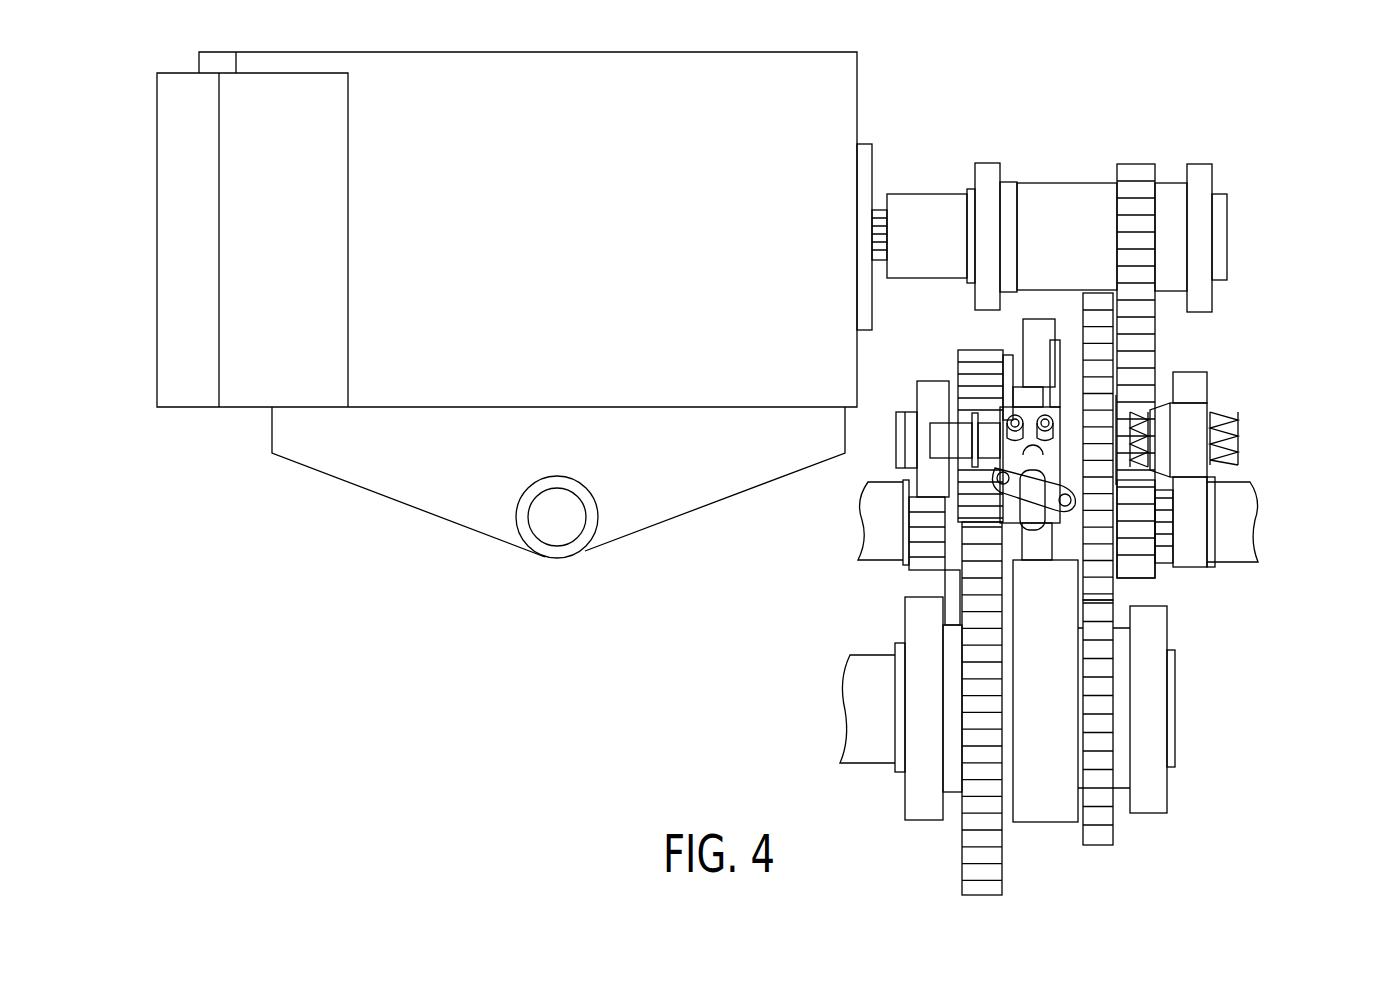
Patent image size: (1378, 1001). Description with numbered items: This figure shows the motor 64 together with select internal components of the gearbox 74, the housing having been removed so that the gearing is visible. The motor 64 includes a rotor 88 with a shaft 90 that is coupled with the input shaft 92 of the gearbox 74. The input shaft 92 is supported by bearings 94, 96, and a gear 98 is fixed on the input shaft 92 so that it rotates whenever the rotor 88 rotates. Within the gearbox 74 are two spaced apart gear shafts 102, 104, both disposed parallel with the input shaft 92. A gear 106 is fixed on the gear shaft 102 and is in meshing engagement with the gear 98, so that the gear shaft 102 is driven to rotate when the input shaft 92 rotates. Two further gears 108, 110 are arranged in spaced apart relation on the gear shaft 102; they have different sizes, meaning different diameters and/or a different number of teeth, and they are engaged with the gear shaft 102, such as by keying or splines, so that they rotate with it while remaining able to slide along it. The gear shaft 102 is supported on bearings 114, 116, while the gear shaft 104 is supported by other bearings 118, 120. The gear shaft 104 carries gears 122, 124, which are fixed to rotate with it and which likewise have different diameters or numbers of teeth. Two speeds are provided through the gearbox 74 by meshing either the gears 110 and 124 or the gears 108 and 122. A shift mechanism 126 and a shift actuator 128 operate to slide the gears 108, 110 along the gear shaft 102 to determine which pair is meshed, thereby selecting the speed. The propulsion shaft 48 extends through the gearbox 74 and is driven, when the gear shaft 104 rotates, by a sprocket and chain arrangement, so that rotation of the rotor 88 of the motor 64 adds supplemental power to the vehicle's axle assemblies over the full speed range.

The propulsion shaft 48 is at (1243, 563).
The motor 64 is at (578, 231).
The gearbox 74 is at (1255, 310).
The rotor 88 is at (872, 177).
The shaft 90 is at (880, 207).
The input shaft 92 is at (1067, 183).
The bearing 94 is at (985, 162).
The bearing 96 is at (1202, 163).
The gear 98 is at (1138, 164).
The gear shaft 102 is at (893, 440).
The gear shaft 104 is at (895, 640).
The gear 106 is at (1137, 578).
The gear 108 is at (982, 350).
The gear 110 is at (1098, 293).
The bearing 114 is at (932, 380).
The bearing 116 is at (1190, 372).
The bearing 118 is at (923, 822).
The bearing 120 is at (1148, 815).
The gear 122 is at (1000, 873).
The gear 124 is at (1097, 847).
The shift mechanism 126 is at (1042, 318).
The shift actuator 128 is at (1197, 420).